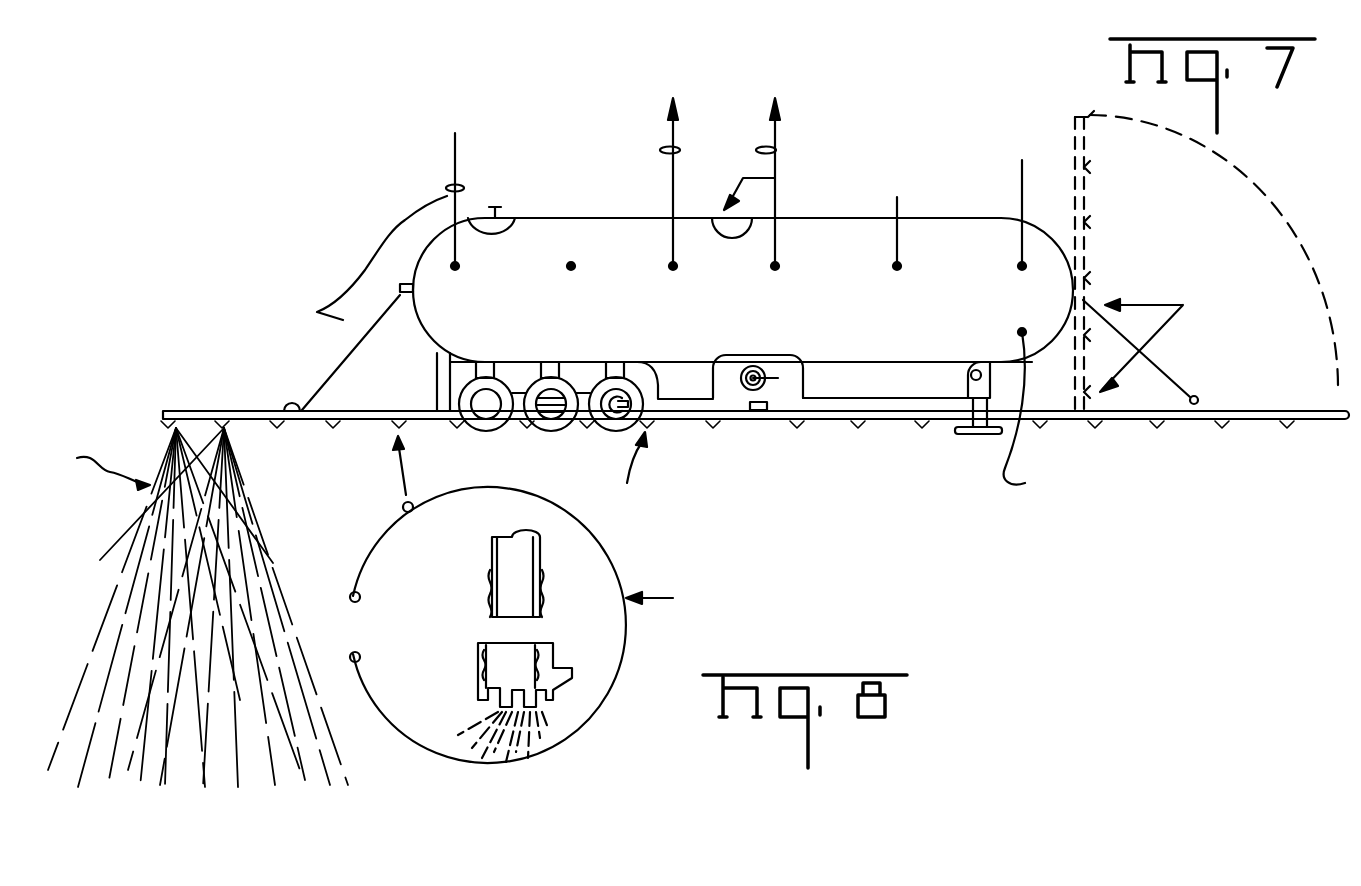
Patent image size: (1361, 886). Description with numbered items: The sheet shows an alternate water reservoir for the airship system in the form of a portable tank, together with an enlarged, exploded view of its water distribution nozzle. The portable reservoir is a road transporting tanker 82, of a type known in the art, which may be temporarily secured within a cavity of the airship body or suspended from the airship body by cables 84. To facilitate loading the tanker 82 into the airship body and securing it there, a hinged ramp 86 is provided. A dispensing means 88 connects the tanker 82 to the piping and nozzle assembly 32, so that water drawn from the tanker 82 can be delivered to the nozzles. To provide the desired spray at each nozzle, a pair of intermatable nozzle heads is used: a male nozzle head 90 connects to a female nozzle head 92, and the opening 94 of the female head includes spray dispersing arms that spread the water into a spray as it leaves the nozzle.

In FIG. 7, the piping and nozzle assembly 32 is at (900, 420).
In FIG. 8, the piping and nozzle assembly 32 is at (497, 703).
In FIG. 7, the road transporting tanker 82 is at (835, 217).
In FIG. 7, the cables 84 is at (680, 148).
In FIG. 7, the hinged ramp 86 is at (1085, 145).
In FIG. 7, the dispensing means 88 is at (772, 338).
In FIG. 8, the male nozzle head 90 is at (540, 577).
In FIG. 8, the female nozzle head 92 is at (567, 675).
In FIG. 8, the opening 94 is at (527, 710).